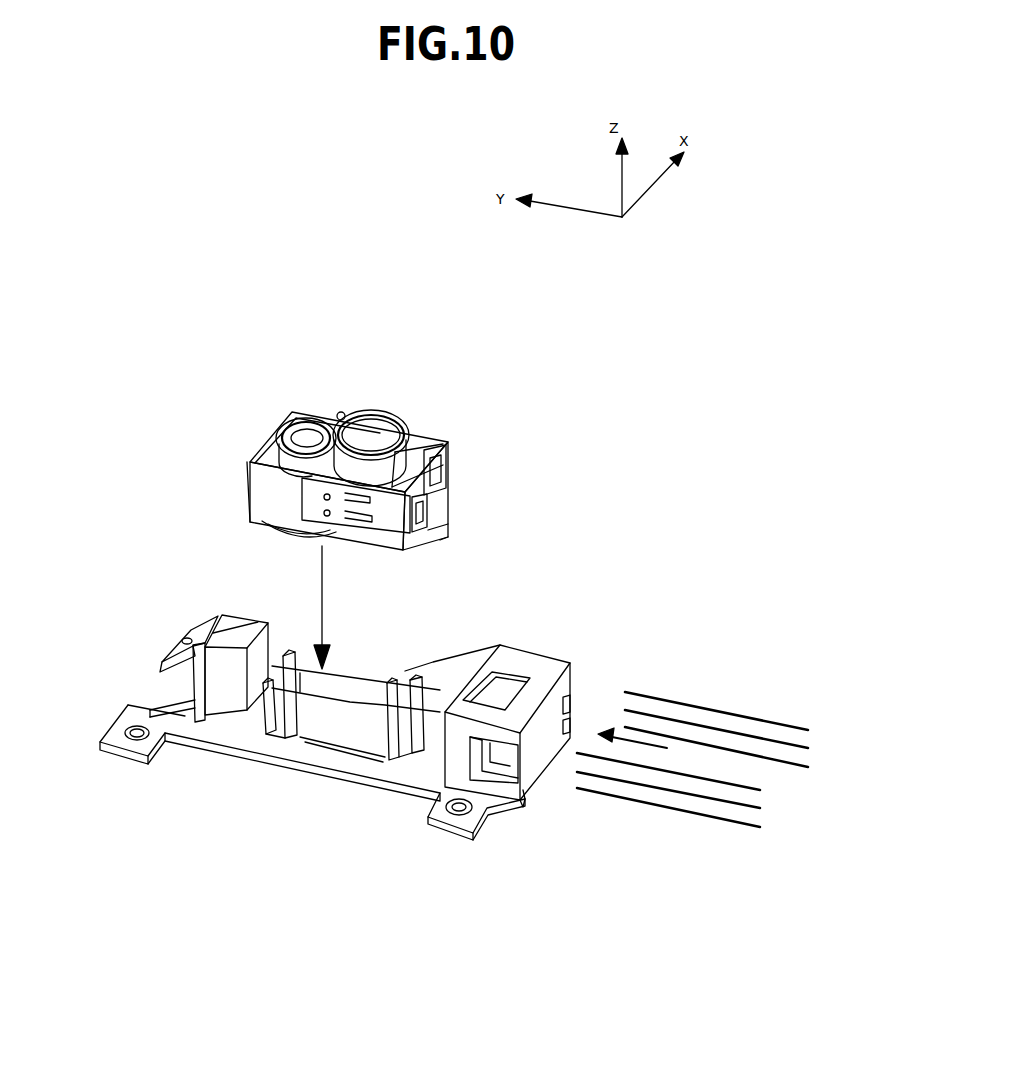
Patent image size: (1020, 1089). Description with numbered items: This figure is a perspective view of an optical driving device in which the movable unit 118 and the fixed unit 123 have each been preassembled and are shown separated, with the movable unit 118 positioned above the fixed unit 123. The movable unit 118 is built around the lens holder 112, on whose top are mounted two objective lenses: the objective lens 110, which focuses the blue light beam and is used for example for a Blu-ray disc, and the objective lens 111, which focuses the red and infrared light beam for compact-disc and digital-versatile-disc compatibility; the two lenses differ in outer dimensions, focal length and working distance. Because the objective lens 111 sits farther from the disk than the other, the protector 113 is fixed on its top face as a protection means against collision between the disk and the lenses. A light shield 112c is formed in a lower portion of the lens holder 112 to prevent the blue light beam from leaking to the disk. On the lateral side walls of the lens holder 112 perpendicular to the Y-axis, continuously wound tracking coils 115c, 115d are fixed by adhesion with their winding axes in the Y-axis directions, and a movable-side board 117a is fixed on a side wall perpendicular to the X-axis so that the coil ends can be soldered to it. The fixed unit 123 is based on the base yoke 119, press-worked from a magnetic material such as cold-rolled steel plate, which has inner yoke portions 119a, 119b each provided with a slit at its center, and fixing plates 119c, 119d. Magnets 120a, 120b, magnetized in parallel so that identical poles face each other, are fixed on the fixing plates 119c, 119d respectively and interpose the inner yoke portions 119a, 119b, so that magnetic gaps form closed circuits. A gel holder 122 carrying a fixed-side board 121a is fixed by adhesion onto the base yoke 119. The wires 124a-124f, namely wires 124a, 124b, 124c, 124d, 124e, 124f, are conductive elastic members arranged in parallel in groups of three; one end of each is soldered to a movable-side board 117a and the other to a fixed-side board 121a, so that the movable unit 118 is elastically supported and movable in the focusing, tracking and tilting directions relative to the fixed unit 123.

The objective lens 110 is at (303, 425).
The objective lens 111 is at (368, 425).
The lens holder 112 is at (280, 492).
The light shield 112c is at (262, 528).
The protector 113 is at (410, 420).
The tracking coil 115c is at (458, 500).
The tracking coil 115d is at (462, 467).
The movable-side board 117a is at (460, 528).
The movable unit 118 is at (140, 543).
The base yoke 119 is at (333, 754).
The inner yoke portion 119a is at (265, 728).
The inner yoke portion 119b is at (402, 740).
The fixing plate 119c is at (193, 691).
The fixing plate 119d is at (542, 632).
The magnet 120a is at (247, 643).
The magnet 120b is at (447, 672).
The fixed-side board 121a is at (502, 755).
The gel holder 122 is at (543, 655).
The fixed unit 123 is at (105, 573).
The wires 124a-124f is at (838, 751).
The wire 124a is at (716, 711).
The wire 124b is at (716, 729).
The wire 124c is at (716, 747).
The wire 124d is at (668, 771).
The wire 124e is at (668, 790).
The wire 124f is at (668, 807).